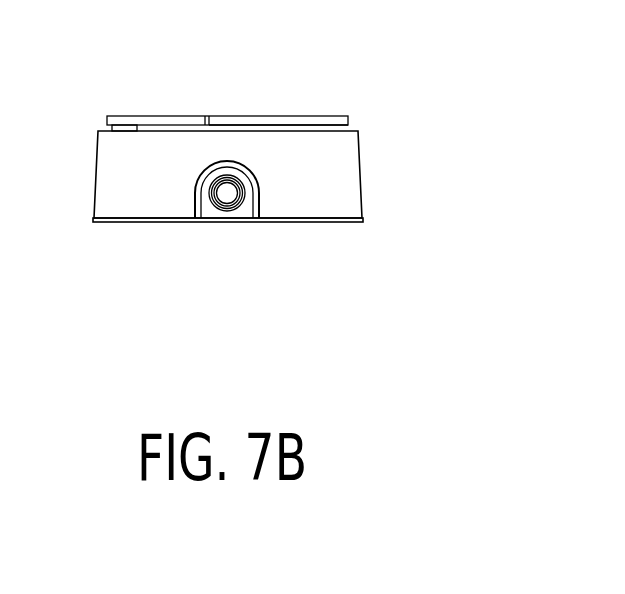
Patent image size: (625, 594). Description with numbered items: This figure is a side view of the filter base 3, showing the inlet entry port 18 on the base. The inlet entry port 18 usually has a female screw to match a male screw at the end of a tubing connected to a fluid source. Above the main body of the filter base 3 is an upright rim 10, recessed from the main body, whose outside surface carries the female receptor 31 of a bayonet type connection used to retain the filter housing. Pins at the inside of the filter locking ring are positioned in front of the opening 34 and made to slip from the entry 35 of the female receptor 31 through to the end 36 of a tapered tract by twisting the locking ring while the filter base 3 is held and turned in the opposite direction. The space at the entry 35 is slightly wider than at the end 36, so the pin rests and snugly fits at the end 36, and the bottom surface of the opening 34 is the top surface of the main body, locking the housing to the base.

The filter base 3 is at (347, 210).
The upright rim 10 is at (170, 122).
The opening 34 is at (228, 118).
The entry 35 is at (240, 127).
The female receptor 31 is at (285, 127).
The end 36 is at (347, 128).
The inlet entry port 18 is at (227, 198).